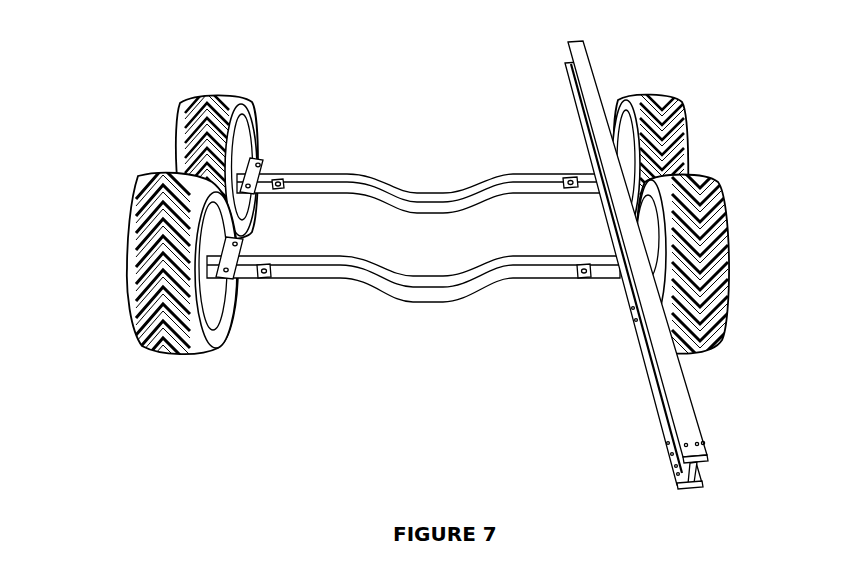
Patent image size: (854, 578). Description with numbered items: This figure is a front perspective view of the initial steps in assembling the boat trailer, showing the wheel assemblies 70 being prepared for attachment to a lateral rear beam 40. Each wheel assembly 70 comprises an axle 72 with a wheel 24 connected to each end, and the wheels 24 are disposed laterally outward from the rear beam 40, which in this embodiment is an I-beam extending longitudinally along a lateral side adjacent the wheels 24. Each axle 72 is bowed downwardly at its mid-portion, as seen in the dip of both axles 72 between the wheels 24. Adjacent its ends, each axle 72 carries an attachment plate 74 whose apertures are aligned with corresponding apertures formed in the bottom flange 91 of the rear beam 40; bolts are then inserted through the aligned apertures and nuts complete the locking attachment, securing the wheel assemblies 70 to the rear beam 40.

The wheel assembly 70 is at (414, 265).
The wheel 24 is at (130, 292).
The axle 72 is at (318, 173).
The attachment plate 74 is at (264, 164).
The lateral rear beam 40 is at (605, 265).
The bottom flange 91 is at (685, 438).